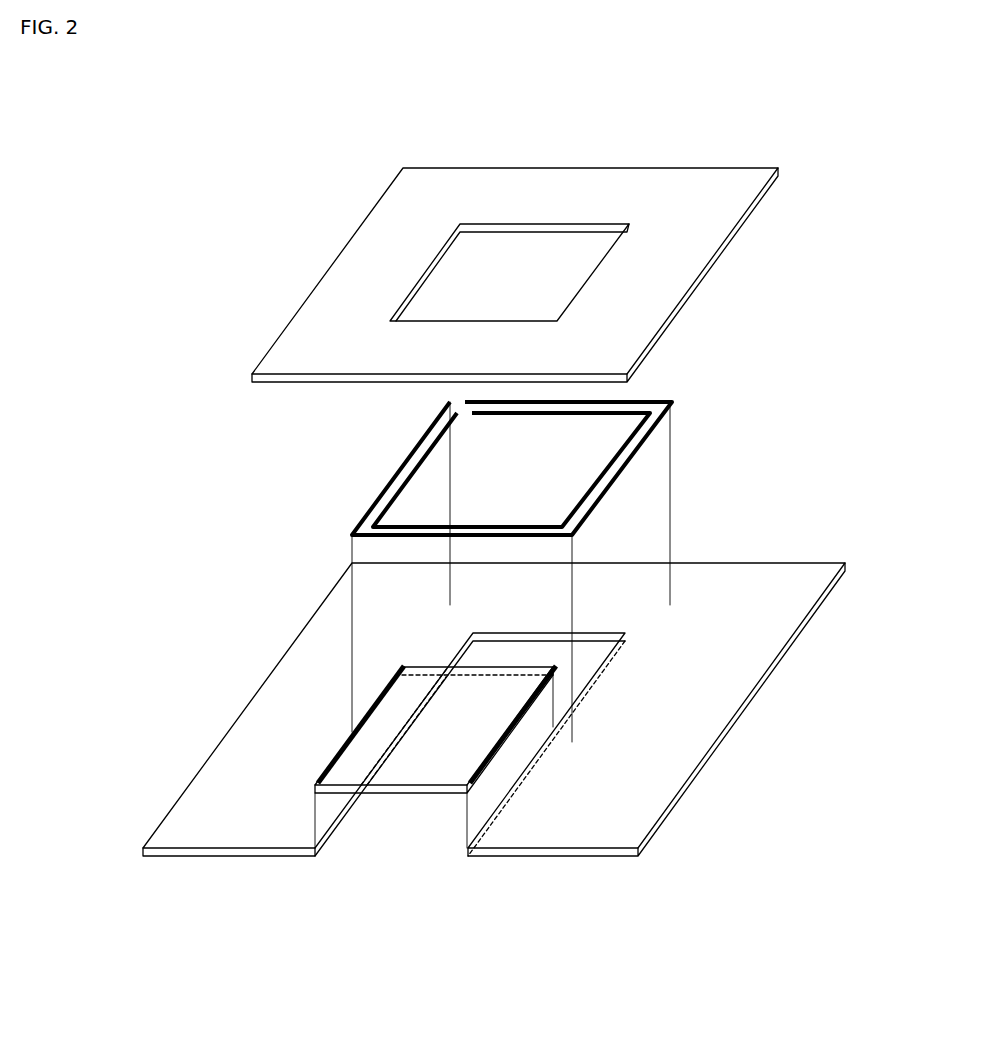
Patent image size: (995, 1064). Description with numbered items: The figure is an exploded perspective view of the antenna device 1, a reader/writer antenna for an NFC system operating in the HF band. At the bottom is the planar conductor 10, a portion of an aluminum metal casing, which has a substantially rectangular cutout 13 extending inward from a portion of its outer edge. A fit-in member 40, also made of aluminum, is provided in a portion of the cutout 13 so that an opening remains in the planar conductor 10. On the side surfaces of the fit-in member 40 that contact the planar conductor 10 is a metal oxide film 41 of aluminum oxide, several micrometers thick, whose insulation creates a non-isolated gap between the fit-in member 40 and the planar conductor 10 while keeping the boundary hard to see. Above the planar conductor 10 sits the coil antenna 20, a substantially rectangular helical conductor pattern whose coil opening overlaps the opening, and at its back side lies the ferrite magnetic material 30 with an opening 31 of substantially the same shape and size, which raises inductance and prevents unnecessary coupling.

The antenna device 1 is at (252, 167).
The planar conductor 10 is at (331, 611).
The cutout 13 is at (548, 647).
The coil antenna 20 is at (386, 478).
The ferrite magnetic material 30 is at (404, 193).
The opening 31 is at (524, 279).
The fit-in member 40 is at (402, 773).
The metal oxide film 41 is at (318, 780).